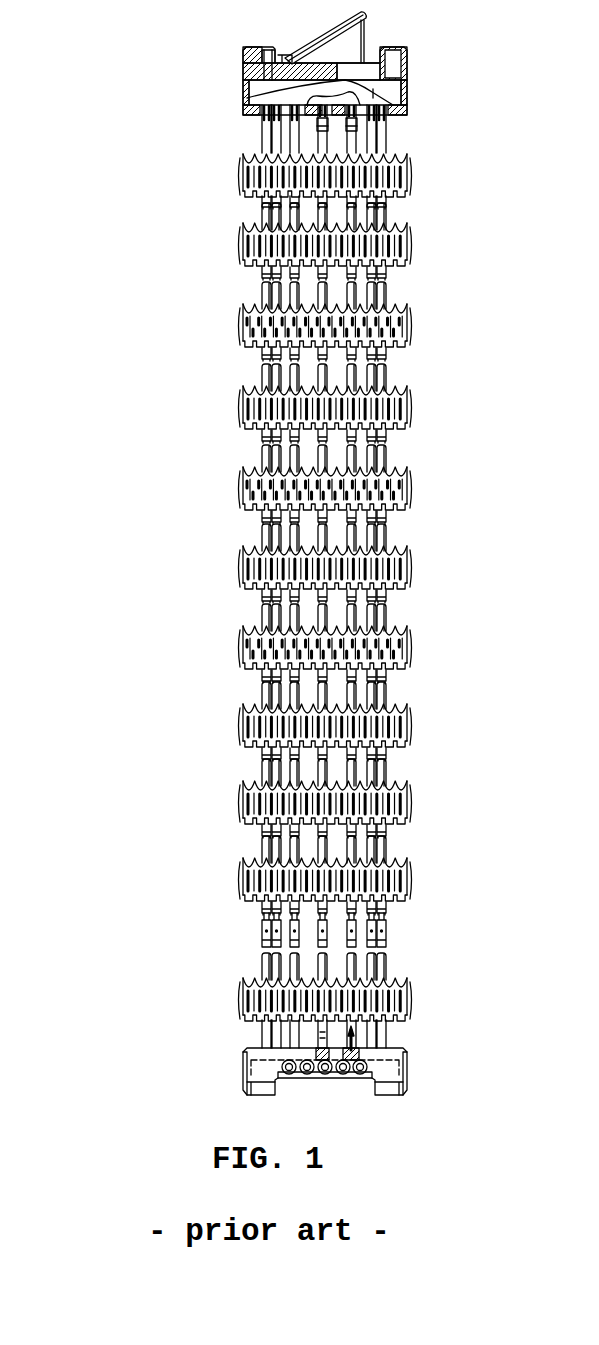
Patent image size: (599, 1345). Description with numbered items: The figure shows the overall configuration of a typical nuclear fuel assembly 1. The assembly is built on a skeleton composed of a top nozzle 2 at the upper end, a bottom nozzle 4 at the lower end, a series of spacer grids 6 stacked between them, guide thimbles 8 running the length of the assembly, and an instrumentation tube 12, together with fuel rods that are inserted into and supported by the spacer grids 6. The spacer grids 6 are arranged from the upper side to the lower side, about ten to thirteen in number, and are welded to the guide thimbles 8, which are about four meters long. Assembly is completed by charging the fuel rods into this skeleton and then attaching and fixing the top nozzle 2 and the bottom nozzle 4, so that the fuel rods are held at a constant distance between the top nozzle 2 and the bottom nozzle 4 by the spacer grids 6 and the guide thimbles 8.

The nuclear fuel assembly 1 is at (186, 359).
The top nozzle 2 is at (407, 64).
The bottom nozzle 4 is at (404, 1067).
The spacer grids 6 is at (408, 566).
The guide thimbles 8 is at (266, 132).
The instrumentation tube 12 is at (328, 137).